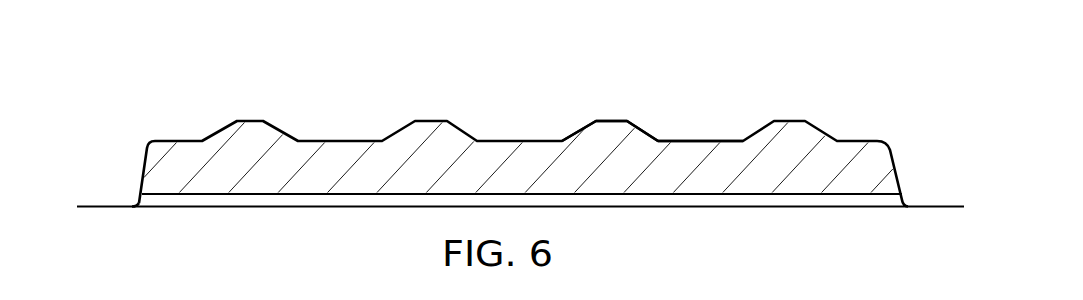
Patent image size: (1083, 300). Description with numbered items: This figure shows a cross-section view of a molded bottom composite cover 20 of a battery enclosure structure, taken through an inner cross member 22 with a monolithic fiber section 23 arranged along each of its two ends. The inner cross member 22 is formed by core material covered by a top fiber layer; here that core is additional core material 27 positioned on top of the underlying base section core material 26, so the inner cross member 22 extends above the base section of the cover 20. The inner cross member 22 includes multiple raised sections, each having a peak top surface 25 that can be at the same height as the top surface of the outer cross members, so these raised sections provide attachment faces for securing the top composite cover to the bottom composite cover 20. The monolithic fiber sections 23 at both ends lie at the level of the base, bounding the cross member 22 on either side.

The bottom composite cover 20 is at (872, 88).
The inner cross member 22 is at (335, 140).
The monolithic fiber section 23 is at (105, 205).
The peak top surface 25 is at (602, 120).
The base section core material 26 is at (292, 203).
The additional core material 27 is at (690, 147).